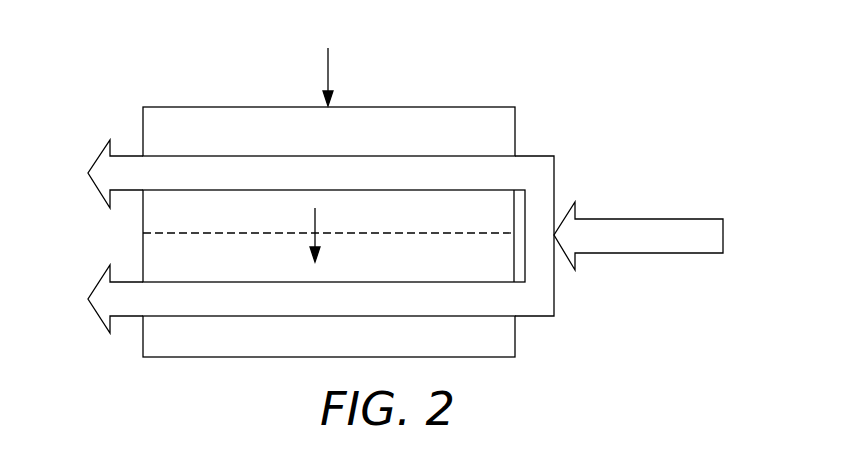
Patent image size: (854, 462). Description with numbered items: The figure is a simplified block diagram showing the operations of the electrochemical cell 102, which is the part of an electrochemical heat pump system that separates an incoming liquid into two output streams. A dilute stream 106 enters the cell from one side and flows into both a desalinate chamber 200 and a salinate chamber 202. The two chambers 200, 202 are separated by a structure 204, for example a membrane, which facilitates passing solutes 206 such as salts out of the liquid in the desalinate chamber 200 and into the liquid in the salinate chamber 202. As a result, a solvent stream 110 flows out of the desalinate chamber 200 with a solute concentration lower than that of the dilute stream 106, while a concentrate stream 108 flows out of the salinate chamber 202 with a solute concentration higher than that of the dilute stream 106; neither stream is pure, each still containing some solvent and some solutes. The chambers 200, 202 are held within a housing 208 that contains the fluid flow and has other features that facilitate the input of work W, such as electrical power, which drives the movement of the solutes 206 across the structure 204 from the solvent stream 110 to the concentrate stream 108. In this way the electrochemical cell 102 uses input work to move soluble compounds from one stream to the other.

The electrochemical cell 102 is at (229, 67).
The dilute stream 106 is at (708, 219).
The concentrate stream 108 is at (98, 280).
The solvent stream 110 is at (98, 162).
The desalinate chamber 200 is at (150, 128).
The salinate chamber 202 is at (155, 342).
The structure 204 is at (143, 233).
The solutes 206 is at (315, 217).
The housing 208 is at (515, 130).